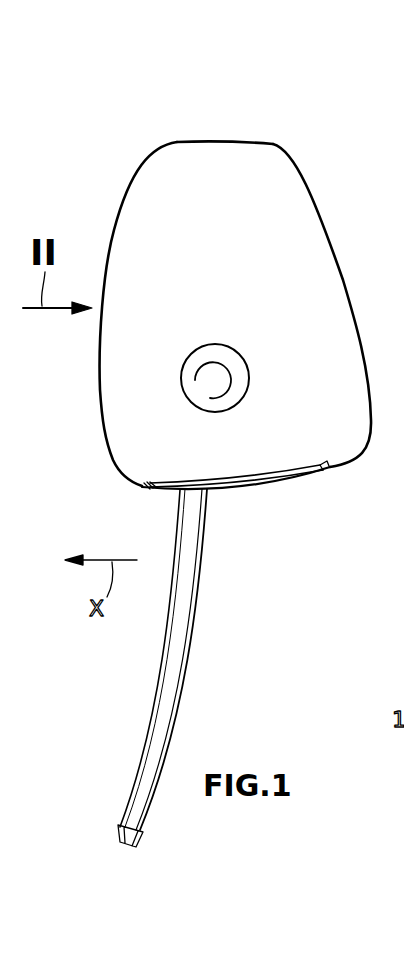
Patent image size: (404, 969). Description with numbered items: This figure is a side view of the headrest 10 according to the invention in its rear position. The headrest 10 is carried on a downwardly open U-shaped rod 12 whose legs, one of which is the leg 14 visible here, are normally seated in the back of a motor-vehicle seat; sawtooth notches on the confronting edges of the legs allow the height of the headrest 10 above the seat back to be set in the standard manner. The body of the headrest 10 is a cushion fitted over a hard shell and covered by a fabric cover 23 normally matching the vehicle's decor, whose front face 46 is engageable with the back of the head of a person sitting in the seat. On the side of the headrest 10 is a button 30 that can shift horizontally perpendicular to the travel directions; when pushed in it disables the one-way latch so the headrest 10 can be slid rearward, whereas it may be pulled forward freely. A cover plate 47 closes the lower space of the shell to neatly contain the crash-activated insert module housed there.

The headrest 10 is at (230, 453).
The U-shaped rod 12 is at (197, 668).
The leg 14 is at (184, 722).
The fabric cover 23 is at (307, 193).
The button 30 is at (245, 346).
The front face 46 is at (121, 188).
The cover plate 47 is at (163, 488).